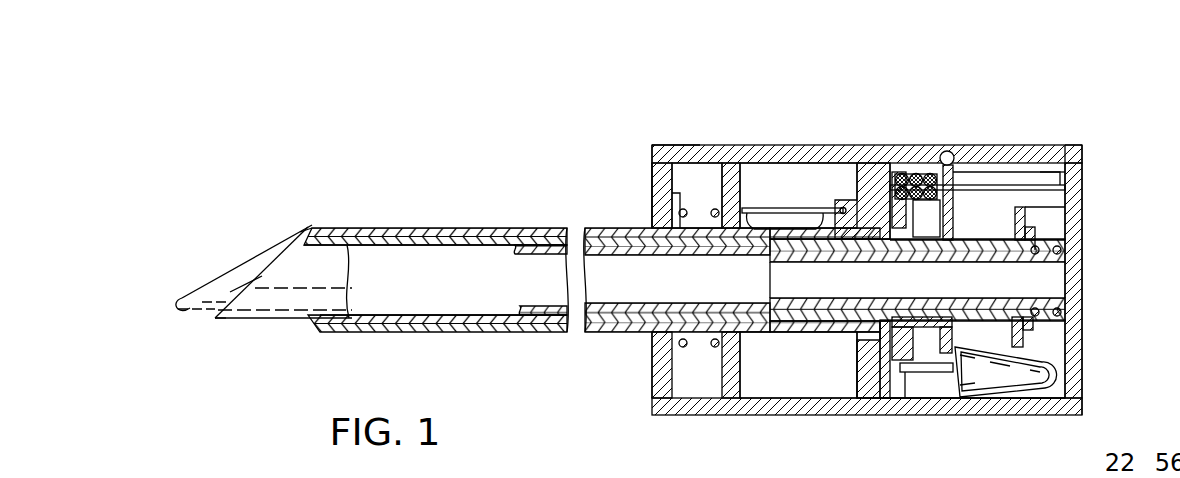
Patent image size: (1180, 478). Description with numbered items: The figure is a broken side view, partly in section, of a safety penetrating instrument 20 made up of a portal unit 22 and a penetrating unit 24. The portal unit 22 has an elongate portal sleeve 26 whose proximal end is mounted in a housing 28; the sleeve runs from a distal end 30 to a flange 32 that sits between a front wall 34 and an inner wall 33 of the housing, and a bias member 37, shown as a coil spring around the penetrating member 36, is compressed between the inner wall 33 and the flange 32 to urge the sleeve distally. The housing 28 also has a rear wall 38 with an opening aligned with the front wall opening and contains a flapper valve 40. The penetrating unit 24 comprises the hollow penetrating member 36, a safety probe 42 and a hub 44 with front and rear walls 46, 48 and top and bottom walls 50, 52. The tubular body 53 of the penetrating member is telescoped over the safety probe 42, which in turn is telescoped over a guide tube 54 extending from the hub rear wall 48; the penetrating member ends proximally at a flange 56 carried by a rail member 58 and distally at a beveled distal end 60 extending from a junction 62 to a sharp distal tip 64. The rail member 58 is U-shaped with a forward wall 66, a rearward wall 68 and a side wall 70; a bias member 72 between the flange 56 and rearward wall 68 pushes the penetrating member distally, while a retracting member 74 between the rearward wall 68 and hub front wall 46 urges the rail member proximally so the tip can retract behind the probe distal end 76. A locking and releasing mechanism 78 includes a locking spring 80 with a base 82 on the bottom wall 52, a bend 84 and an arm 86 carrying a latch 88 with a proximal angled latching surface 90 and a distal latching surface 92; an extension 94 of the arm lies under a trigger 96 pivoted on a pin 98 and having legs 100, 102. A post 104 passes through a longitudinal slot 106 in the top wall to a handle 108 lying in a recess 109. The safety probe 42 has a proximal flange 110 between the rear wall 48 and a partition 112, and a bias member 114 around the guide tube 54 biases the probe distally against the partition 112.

The safety penetrating instrument 20 is at (578, 172).
The portal unit 22 is at (792, 115).
The penetrating unit 24 is at (1109, 124).
The portal sleeve 26 is at (427, 226).
The housing 28 is at (651, 147).
The distal end 30 is at (306, 232).
The flange 32 is at (677, 163).
The inner wall 33 is at (717, 163).
The front wall 34 is at (653, 181).
The penetrating member 36 is at (292, 321).
The bias member 37 is at (672, 376).
The rear wall 38 is at (860, 383).
The flapper valve 40 is at (809, 206).
The safety probe 42 is at (248, 235).
The hub 44 is at (1086, 171).
The front wall 46 is at (893, 170).
The rear wall 48 is at (1088, 160).
The top wall 50 is at (1080, 153).
The bottom wall 52 is at (1055, 400).
The tubular body 53 is at (542, 333).
The guide tube 54 is at (1076, 280).
The flange 56 is at (953, 228).
The rail member 58 is at (874, 165).
The beveled distal end 60 is at (246, 288).
The junction 62 is at (306, 232).
The distal tip 64 is at (217, 318).
The forward wall 66 is at (899, 165).
The rearward wall 68 is at (940, 225).
The side wall 70 is at (937, 170).
The bias member 72 is at (880, 262).
The retracting member 74 is at (930, 172).
The distal end 76 is at (183, 300).
The locking and releasing mechanism 78 is at (964, 383).
The locking spring 80 is at (1060, 381).
The base 82 is at (882, 398).
The bend 84 is at (1058, 377).
The arm 86 is at (1035, 360).
The latch 88 is at (1000, 372).
The proximal angled latching surface 90 is at (991, 335).
The distal latching surface 92 is at (967, 358).
The extension 94 is at (906, 398).
The trigger 96 is at (925, 336).
The pin 98 is at (884, 398).
The leg 100 is at (866, 356).
The leg 102 is at (920, 368).
The post 104 is at (1020, 157).
The longitudinal slot 106 is at (1005, 157).
The handle 108 is at (950, 172).
The recess 109 is at (1045, 168).
The proximal flange 110 is at (1066, 226).
The partition 112 is at (1068, 207).
The bias member 114 is at (1062, 252).